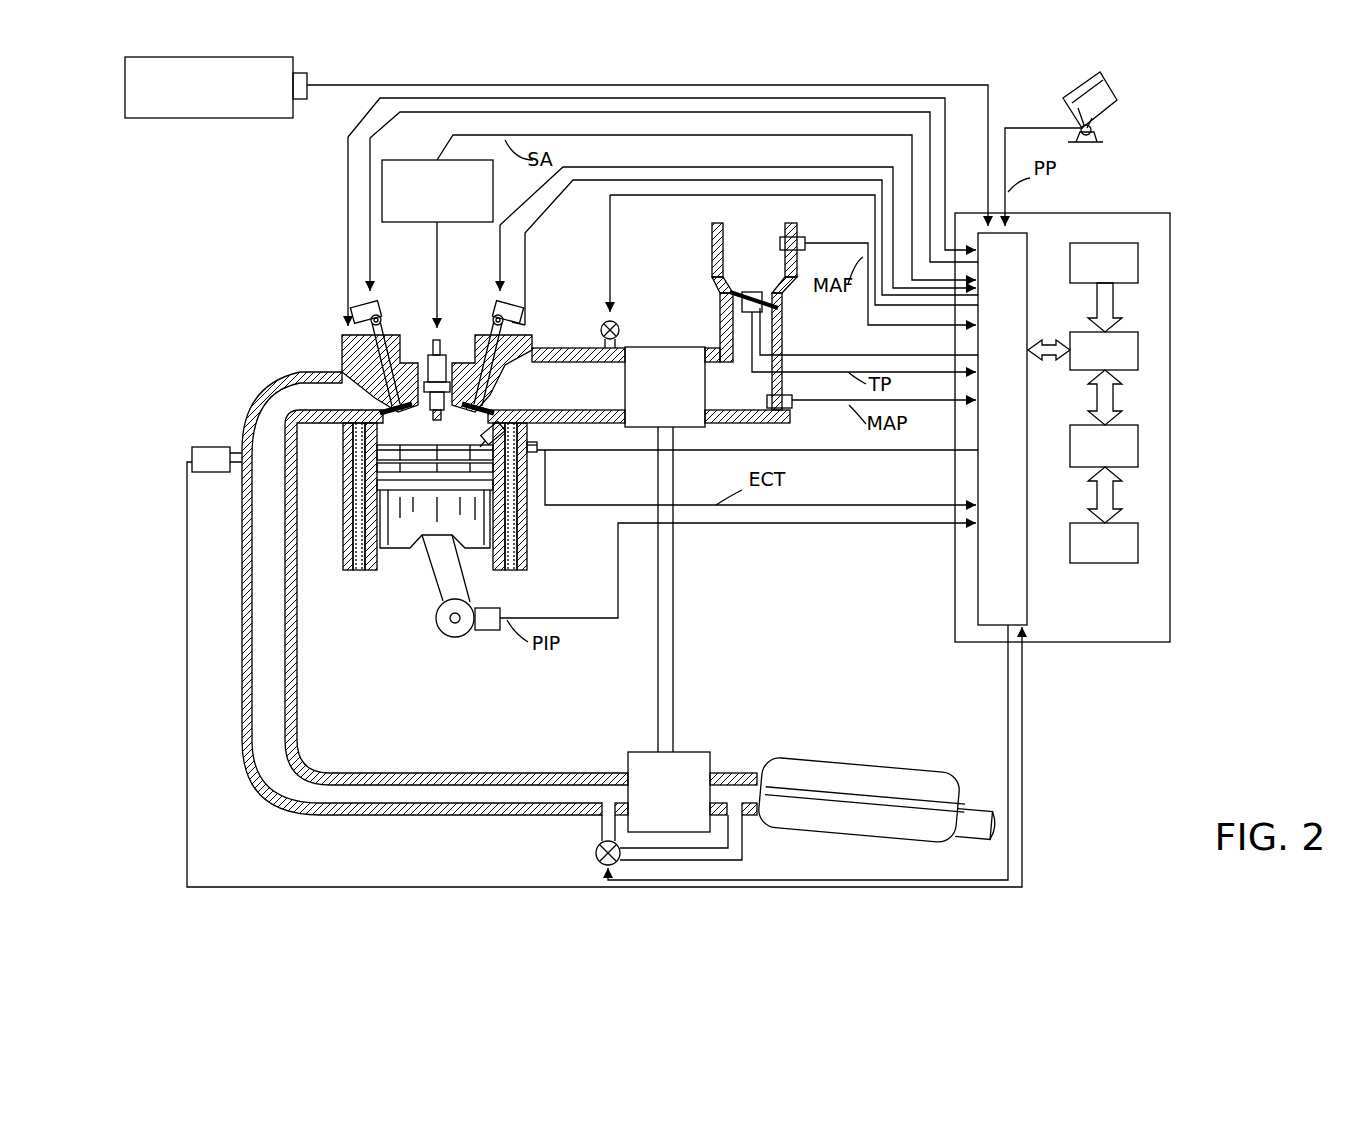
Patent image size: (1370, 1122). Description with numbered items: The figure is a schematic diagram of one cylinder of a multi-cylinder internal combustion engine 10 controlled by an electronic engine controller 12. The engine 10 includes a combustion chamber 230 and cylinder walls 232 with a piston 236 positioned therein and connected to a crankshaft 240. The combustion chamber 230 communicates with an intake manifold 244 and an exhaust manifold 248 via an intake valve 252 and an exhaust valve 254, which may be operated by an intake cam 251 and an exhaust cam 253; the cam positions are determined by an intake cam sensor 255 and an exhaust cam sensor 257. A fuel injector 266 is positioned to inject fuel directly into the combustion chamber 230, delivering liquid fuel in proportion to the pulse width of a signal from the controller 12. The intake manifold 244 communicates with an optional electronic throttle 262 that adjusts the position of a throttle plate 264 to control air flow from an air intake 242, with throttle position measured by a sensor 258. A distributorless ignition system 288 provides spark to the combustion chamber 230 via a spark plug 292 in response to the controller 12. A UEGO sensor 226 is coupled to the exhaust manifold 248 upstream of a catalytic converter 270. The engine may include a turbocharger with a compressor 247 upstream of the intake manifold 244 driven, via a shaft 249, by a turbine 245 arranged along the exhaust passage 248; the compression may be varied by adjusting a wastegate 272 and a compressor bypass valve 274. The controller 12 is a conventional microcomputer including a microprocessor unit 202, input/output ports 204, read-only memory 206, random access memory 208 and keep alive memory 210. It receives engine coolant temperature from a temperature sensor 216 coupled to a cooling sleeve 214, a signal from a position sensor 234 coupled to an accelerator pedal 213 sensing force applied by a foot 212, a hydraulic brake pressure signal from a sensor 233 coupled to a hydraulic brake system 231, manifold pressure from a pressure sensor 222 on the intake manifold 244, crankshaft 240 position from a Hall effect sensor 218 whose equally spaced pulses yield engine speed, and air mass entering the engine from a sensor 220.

The internal combustion engine 10 is at (275, 290).
The electronic engine controller 12 is at (1160, 215).
The microprocessor unit 202 is at (1140, 350).
The input/output ports 204 is at (1030, 245).
The read-only memory 206 is at (1140, 258).
The random access memory 208 is at (1140, 447).
The keep alive memory 210 is at (1140, 542).
The foot 212 is at (1112, 98).
The accelerator pedal 213 is at (1065, 103).
The cooling sleeve 214 is at (528, 528).
The temperature sensor 216 is at (540, 456).
The Hall effect sensor 218 is at (484, 632).
The air mass sensor 220 is at (797, 238).
The pressure sensor 222 is at (790, 410).
The Universal Exhaust Gas Oxygen (UEGO) sensor 226 is at (192, 452).
The combustion chamber 230 is at (437, 428).
The hydraulic brake system 231 is at (122, 100).
The cylinder walls 232 is at (380, 572).
The hydraulic brake pressure sensor 233 is at (310, 90).
The position sensor 234 is at (1100, 130).
The piston 236 is at (424, 560).
The crankshaft 240 is at (445, 634).
The air intake 242 is at (754, 316).
The intake manifold 244 is at (626, 371).
The turbine 245 is at (669, 792).
The compressor 247 is at (665, 387).
The exhaust manifold 248 is at (499, 593).
The shaft 249 is at (676, 592).
The intake cam 251 is at (494, 300).
The intake valve 252 is at (492, 395).
The exhaust cam 253 is at (386, 298).
The exhaust valve 254 is at (372, 352).
The intake cam sensor 255 is at (515, 320).
The exhaust cam sensor 257 is at (352, 318).
The throttle position sensor 258 is at (757, 326).
The electronic throttle 262 is at (782, 300).
The throttle plate 264 is at (732, 294).
The fuel injector 266 is at (520, 428).
The catalytic converter 270 is at (770, 765).
The wastegate 272 is at (596, 852).
The compressor bypass valve 274 is at (618, 320).
The distributorless ignition system 288 is at (395, 160).
The spark plug 292 is at (442, 332).